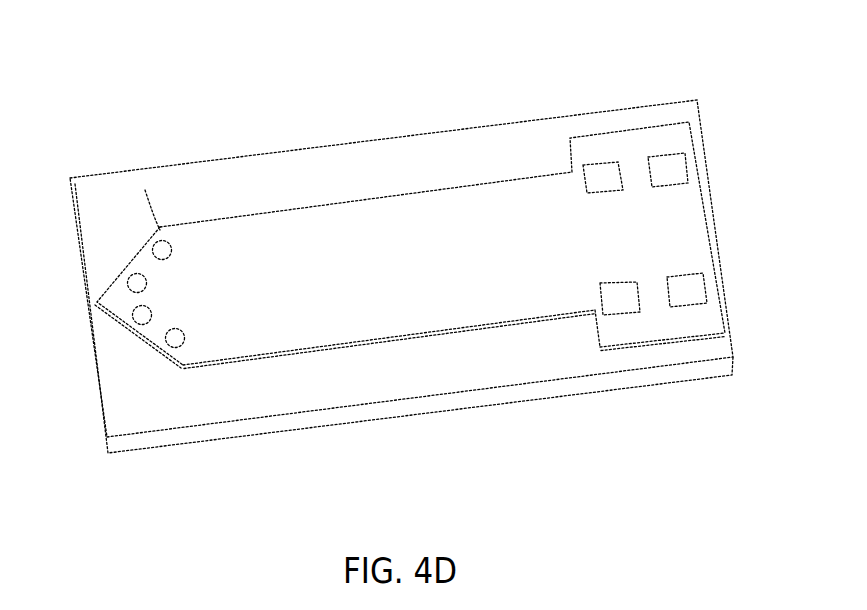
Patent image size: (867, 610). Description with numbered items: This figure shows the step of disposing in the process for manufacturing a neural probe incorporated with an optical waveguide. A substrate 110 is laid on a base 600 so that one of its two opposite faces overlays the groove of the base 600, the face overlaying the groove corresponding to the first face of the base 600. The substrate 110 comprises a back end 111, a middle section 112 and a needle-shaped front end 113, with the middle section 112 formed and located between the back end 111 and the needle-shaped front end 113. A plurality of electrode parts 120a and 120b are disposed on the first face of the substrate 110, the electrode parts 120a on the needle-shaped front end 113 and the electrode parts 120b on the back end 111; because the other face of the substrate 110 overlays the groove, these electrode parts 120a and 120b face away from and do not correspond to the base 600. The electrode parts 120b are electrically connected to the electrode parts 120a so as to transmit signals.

The base 600 is at (708, 170).
The substrate 110 is at (402, 338).
The back end 111 is at (657, 322).
The middle section 112 is at (273, 300).
The needle-shaped front end 113 is at (137, 332).
The electrode parts 120a is at (137, 185).
The electrode parts 120b is at (600, 187).